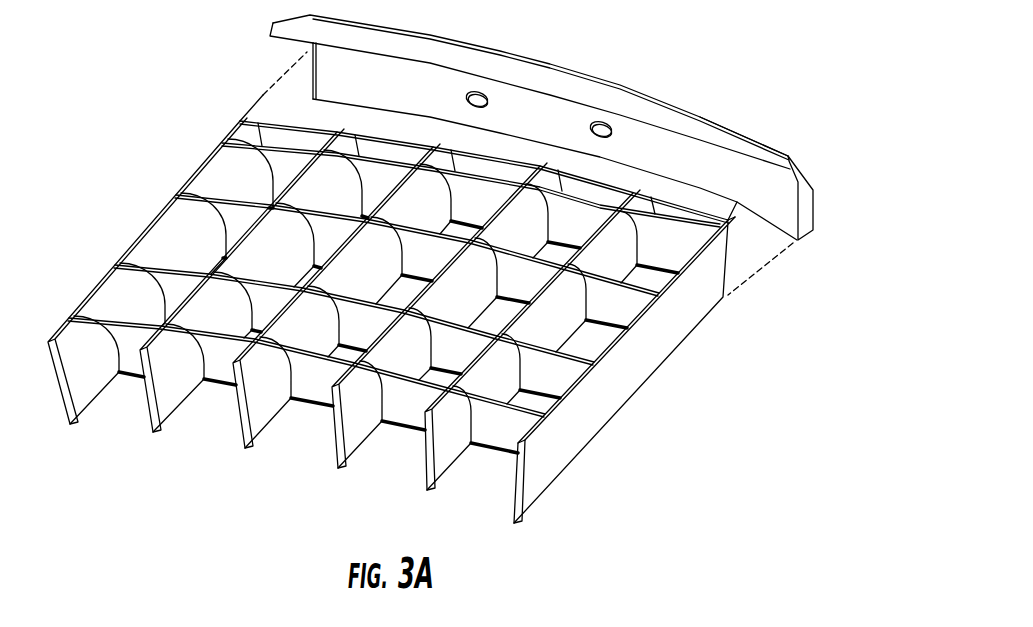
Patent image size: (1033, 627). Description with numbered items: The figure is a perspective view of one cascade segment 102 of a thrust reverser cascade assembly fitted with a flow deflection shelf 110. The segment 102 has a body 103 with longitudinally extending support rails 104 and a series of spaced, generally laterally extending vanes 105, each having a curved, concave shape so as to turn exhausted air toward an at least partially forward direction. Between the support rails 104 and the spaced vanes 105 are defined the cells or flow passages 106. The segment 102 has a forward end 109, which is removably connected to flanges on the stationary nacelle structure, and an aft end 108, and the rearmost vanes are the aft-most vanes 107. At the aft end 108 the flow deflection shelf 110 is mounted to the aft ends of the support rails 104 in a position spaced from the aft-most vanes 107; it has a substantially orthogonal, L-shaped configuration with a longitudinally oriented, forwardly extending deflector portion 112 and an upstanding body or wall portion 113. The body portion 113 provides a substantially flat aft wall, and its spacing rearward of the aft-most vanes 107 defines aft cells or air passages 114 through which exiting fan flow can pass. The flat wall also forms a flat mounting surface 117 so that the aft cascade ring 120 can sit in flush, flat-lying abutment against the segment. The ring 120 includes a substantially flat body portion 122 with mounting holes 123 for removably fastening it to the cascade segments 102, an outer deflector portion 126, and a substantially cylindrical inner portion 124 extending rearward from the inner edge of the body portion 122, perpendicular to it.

The cascade segment 102 is at (175, 134).
The body 103 is at (397, 448).
The support rails 104 is at (99, 386).
The vanes 105 is at (352, 327).
The cells 106 is at (174, 242).
The aft-most vanes 107 is at (649, 264).
The aft end 108 is at (734, 305).
The forward end 109 is at (510, 536).
The flow deflection shelf 110 is at (257, 84).
The deflector portion 112 is at (260, 96).
The body portion 113 is at (688, 234).
The aft cells 114 is at (651, 222).
The mounting surface 117 is at (729, 238).
The aft cascade ring 120 is at (585, 65).
The body portion 122 is at (820, 195).
The mounting holes 123 is at (489, 101).
The inner portion 124 is at (778, 197).
The deflector portion 126 is at (704, 117).